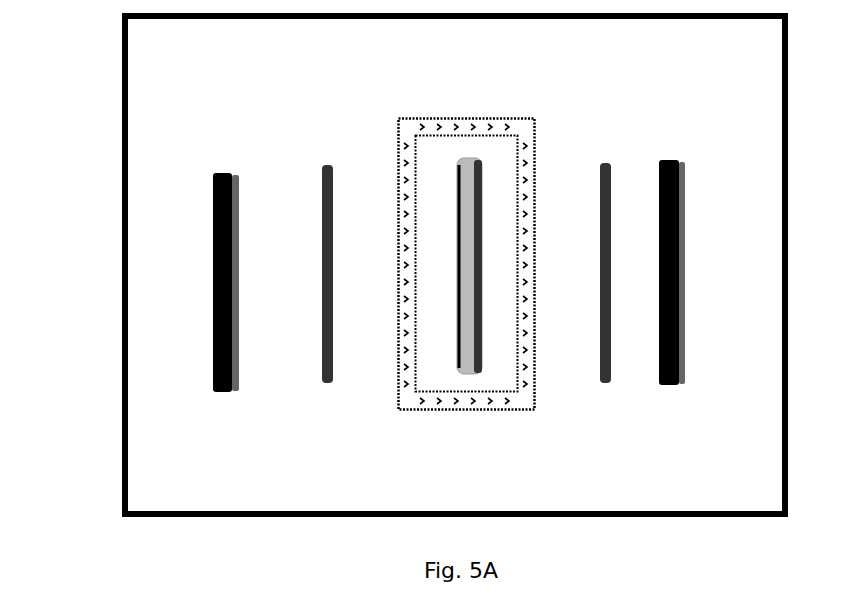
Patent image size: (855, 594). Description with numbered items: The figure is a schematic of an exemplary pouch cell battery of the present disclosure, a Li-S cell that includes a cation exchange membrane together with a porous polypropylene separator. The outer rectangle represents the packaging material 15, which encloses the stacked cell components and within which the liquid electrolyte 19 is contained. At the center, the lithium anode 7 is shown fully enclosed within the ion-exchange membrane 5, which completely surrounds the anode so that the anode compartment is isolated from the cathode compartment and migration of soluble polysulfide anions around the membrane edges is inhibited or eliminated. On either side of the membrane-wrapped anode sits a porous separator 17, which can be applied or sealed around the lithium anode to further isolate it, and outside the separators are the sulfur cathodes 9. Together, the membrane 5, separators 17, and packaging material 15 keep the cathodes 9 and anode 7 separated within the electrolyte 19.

The cation exchange membrane 5 is at (454, 110).
The anode 7 is at (467, 380).
The cathode 9 is at (247, 180).
The packaging material 15 is at (122, 193).
The porous separator 17 is at (327, 393).
The liquid electrolyte 19 is at (590, 498).